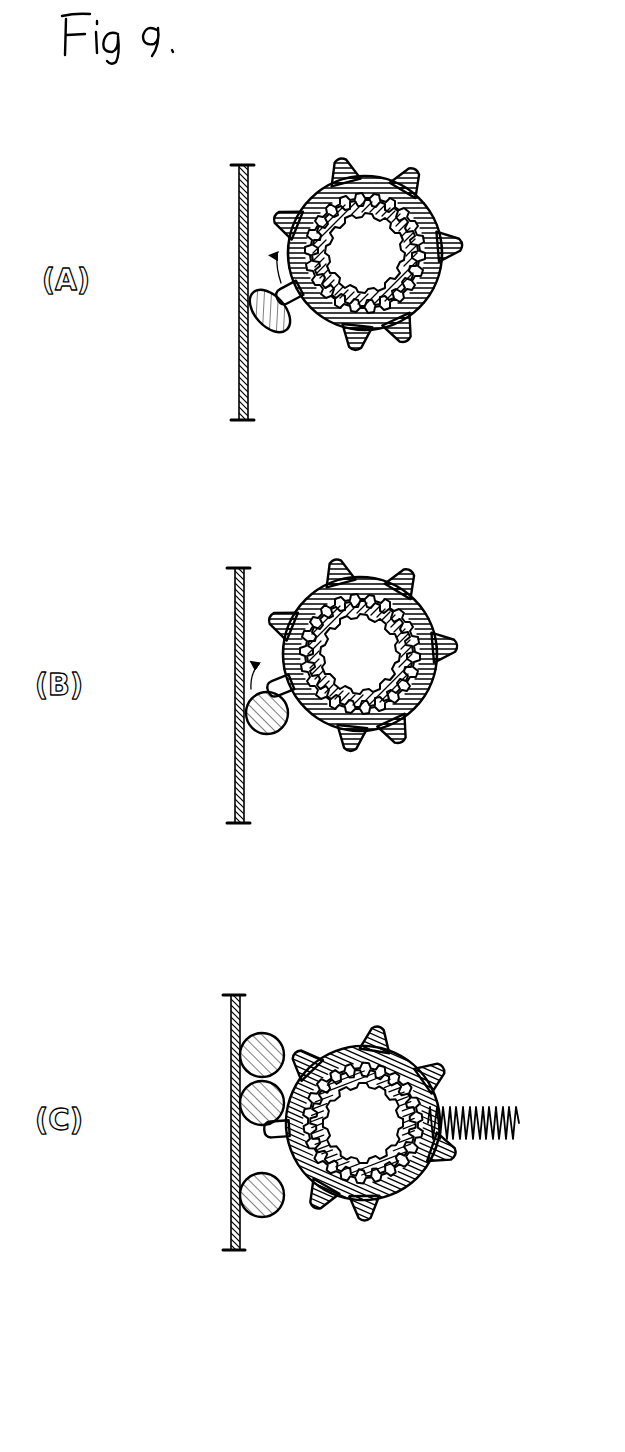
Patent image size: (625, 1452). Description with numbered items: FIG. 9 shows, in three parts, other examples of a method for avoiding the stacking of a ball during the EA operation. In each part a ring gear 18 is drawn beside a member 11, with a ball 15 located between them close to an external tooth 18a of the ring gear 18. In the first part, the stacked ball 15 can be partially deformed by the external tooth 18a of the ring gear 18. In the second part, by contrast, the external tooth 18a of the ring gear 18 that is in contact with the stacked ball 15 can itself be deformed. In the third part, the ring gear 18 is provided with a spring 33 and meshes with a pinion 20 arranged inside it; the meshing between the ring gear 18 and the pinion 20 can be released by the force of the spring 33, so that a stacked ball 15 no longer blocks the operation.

The plate / wall 11 is at (240, 296).
The ball 15 is at (270, 337).
The ring gear 18 is at (318, 190).
The external tooth 18a is at (300, 302).
The pinion 20 is at (370, 1103).
The spring 33 is at (493, 1108).